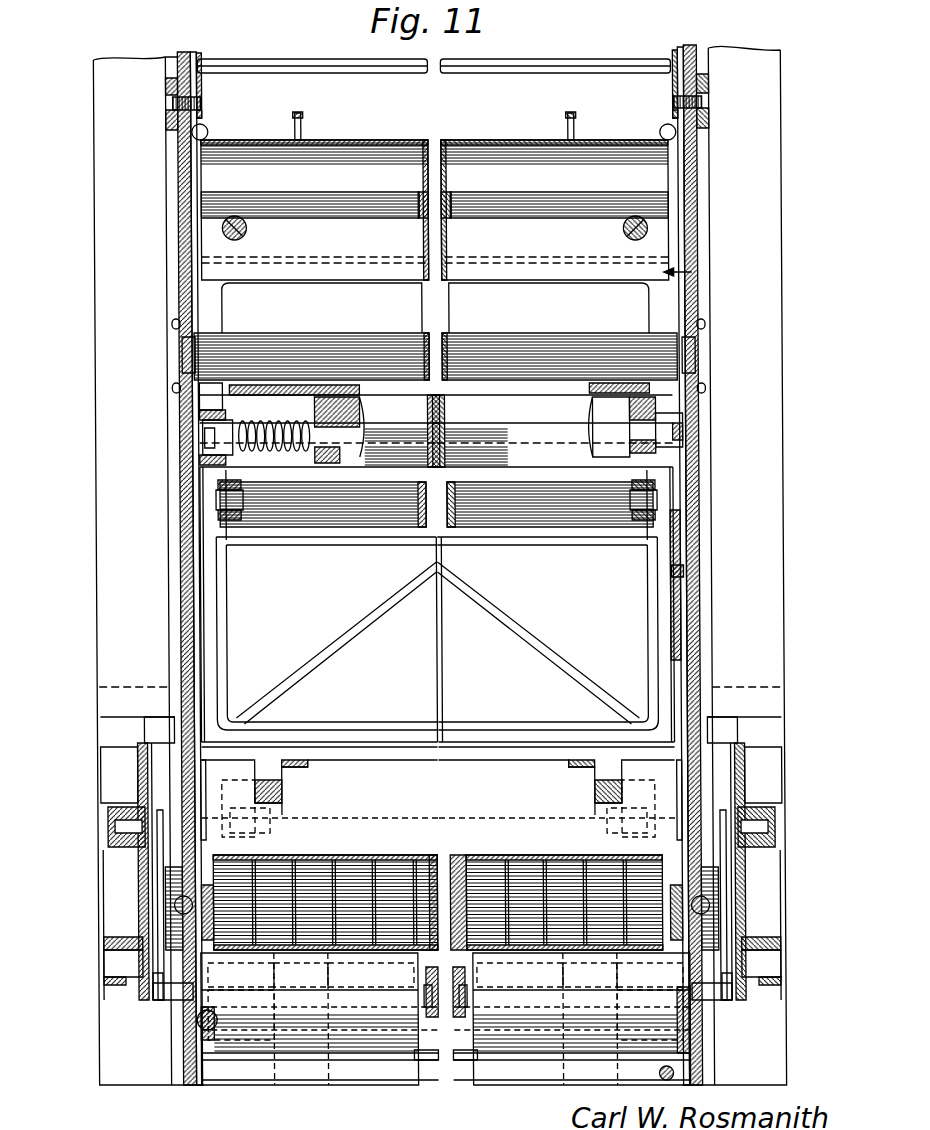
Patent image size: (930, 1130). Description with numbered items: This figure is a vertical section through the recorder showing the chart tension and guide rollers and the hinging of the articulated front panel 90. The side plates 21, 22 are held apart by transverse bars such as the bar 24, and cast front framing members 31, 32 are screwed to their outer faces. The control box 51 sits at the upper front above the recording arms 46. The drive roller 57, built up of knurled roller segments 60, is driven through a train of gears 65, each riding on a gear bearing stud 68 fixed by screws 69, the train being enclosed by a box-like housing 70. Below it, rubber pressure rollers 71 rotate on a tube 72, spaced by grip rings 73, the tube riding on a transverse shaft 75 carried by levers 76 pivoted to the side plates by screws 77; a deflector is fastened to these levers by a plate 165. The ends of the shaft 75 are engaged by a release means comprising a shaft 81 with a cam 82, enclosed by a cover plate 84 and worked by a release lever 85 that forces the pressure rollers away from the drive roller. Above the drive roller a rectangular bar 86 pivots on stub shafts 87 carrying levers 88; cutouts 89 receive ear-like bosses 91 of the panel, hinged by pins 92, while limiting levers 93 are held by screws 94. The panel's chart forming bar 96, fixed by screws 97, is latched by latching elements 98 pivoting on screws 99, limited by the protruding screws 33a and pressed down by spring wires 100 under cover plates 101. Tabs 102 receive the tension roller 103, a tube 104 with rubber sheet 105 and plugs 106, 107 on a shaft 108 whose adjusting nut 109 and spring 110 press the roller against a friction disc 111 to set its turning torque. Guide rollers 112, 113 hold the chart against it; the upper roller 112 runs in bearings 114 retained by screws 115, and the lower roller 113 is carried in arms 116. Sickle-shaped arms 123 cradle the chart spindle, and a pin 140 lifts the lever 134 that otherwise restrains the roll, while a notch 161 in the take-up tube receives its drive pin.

The side plate 21 is at (710, 197).
The side plate 22 is at (177, 203).
The transverse bar 24 is at (390, 990).
The front framing member 31 is at (755, 133).
The front framing member 32 is at (105, 122).
The screws 33a is at (195, 103).
The recording arm 46 is at (300, 115).
The control box 51 is at (510, 73).
The drive roller 57 is at (343, 856).
The roller segments 60 is at (440, 860).
The train of gears 65 is at (160, 878).
The gear bearing stud 68 is at (170, 903).
The screws 69 is at (207, 890).
The box-like housing 70 is at (152, 857).
The pressure rollers 71 is at (290, 1040).
The tube 72 is at (432, 1030).
The grip rings 73 is at (330, 1040).
The transverse shaft 75 is at (150, 995).
The levers 76 is at (207, 1032).
The screws 77 is at (215, 1030).
The shaft 81 is at (103, 945).
The cam 82 is at (147, 980).
The cover plate 84 is at (133, 780).
The release lever 85 is at (107, 937).
The rectangular bar 86 is at (367, 767).
The stub shafts 87 is at (110, 830).
The levers 88 is at (110, 760).
The cutouts 89 is at (277, 790).
The front panel 90 is at (690, 272).
The ear-like bosses 91 is at (277, 803).
The pins 92 is at (303, 762).
The pivoting motion limiting levers 93 is at (200, 800).
The screws 94 is at (222, 780).
The chart forming bar 96 is at (382, 142).
The screws 97 is at (238, 220).
The latching elements 98 is at (200, 113).
The screws 99 is at (207, 132).
The spring wires 100 is at (170, 80).
The cover plates 101 is at (199, 62).
The tab 102 is at (197, 398).
The tension roller 103 is at (372, 422).
The tube 104 is at (365, 375).
The rubber sheet 105 is at (290, 388).
The bearing retaining plug 106 is at (650, 413).
The plug 107 is at (330, 398).
The shaft 108 is at (598, 440).
The adjusting nut 109 is at (200, 430).
The spring 110 is at (265, 425).
The disc of friction material 111 is at (647, 375).
The upper guide roller 112 is at (482, 345).
The lower guide roller 113 is at (355, 520).
The bearings 114 is at (180, 352).
The screws 115 is at (170, 388).
The arms 116 is at (230, 520).
The sickle-shaped arms 123 is at (200, 590).
The lever 134 is at (666, 565).
The pin 140 is at (667, 575).
The notch 161 is at (470, 1040).
The plate 165 is at (425, 1062).